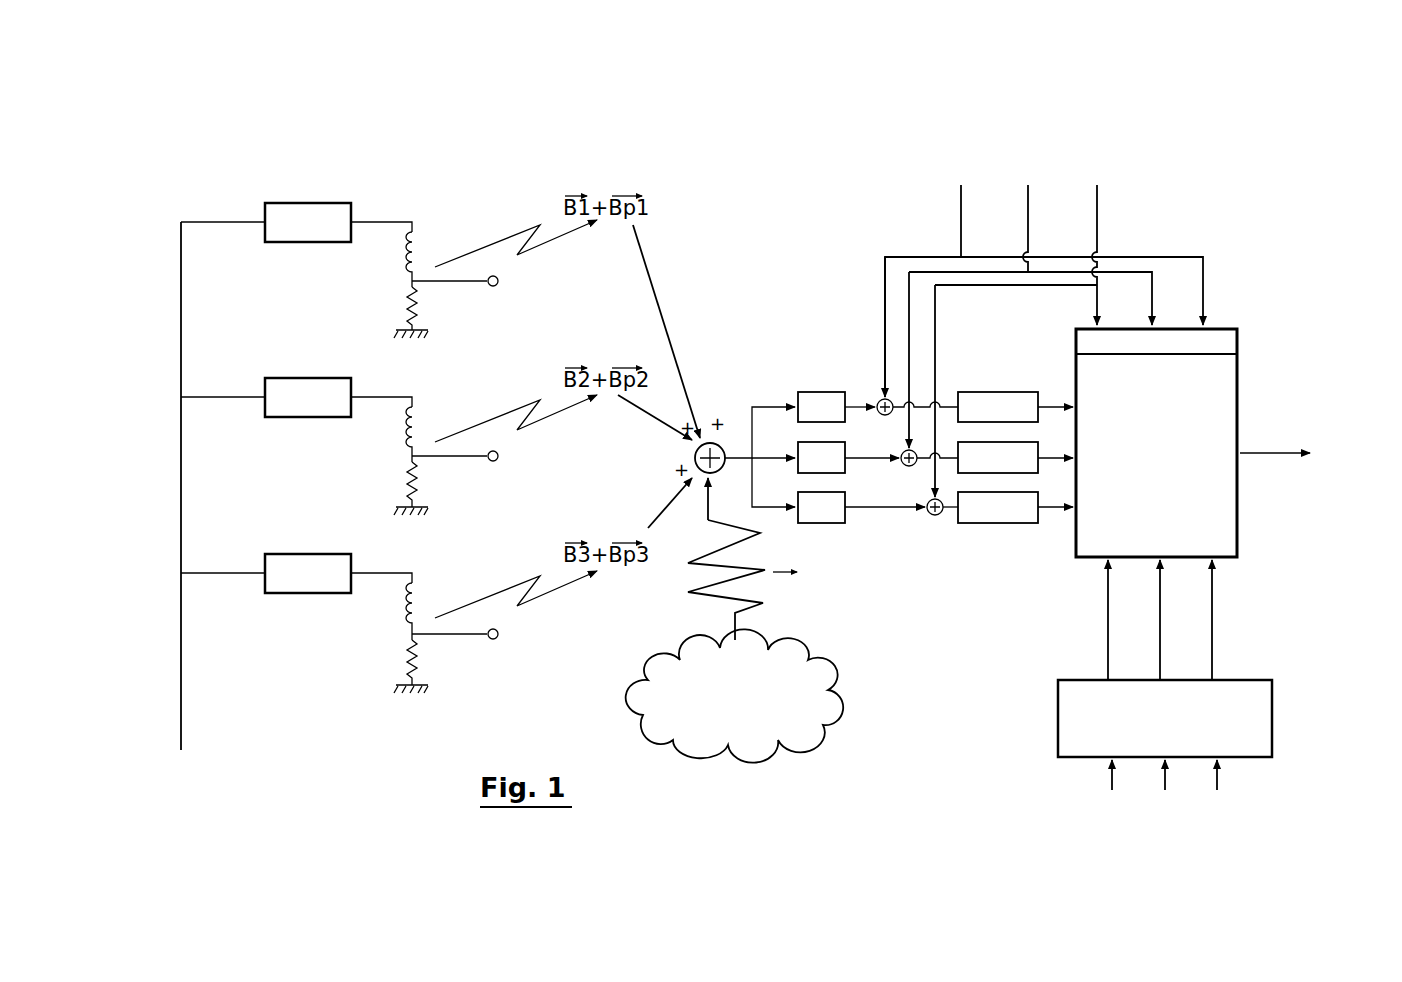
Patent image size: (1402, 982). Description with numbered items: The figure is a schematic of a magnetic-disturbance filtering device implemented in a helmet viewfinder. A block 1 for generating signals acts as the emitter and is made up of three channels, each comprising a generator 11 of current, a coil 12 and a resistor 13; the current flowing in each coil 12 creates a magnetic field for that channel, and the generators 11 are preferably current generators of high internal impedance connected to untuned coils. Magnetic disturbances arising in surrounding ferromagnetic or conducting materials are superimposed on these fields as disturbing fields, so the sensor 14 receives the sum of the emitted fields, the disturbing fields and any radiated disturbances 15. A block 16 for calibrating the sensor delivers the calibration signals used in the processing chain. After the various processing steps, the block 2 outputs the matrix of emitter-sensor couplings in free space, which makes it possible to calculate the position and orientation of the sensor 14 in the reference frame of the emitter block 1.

The block for generating signals 1 is at (208, 573).
The block 2 is at (1212, 559).
The generator of current 11 is at (308, 398).
The coil 12 is at (398, 253).
The resistor 13 is at (398, 301).
The sensor 14 is at (995, 220).
The radiated disturbances 15 is at (735, 620).
The block for calibrating the sensor 16 is at (1034, 284).